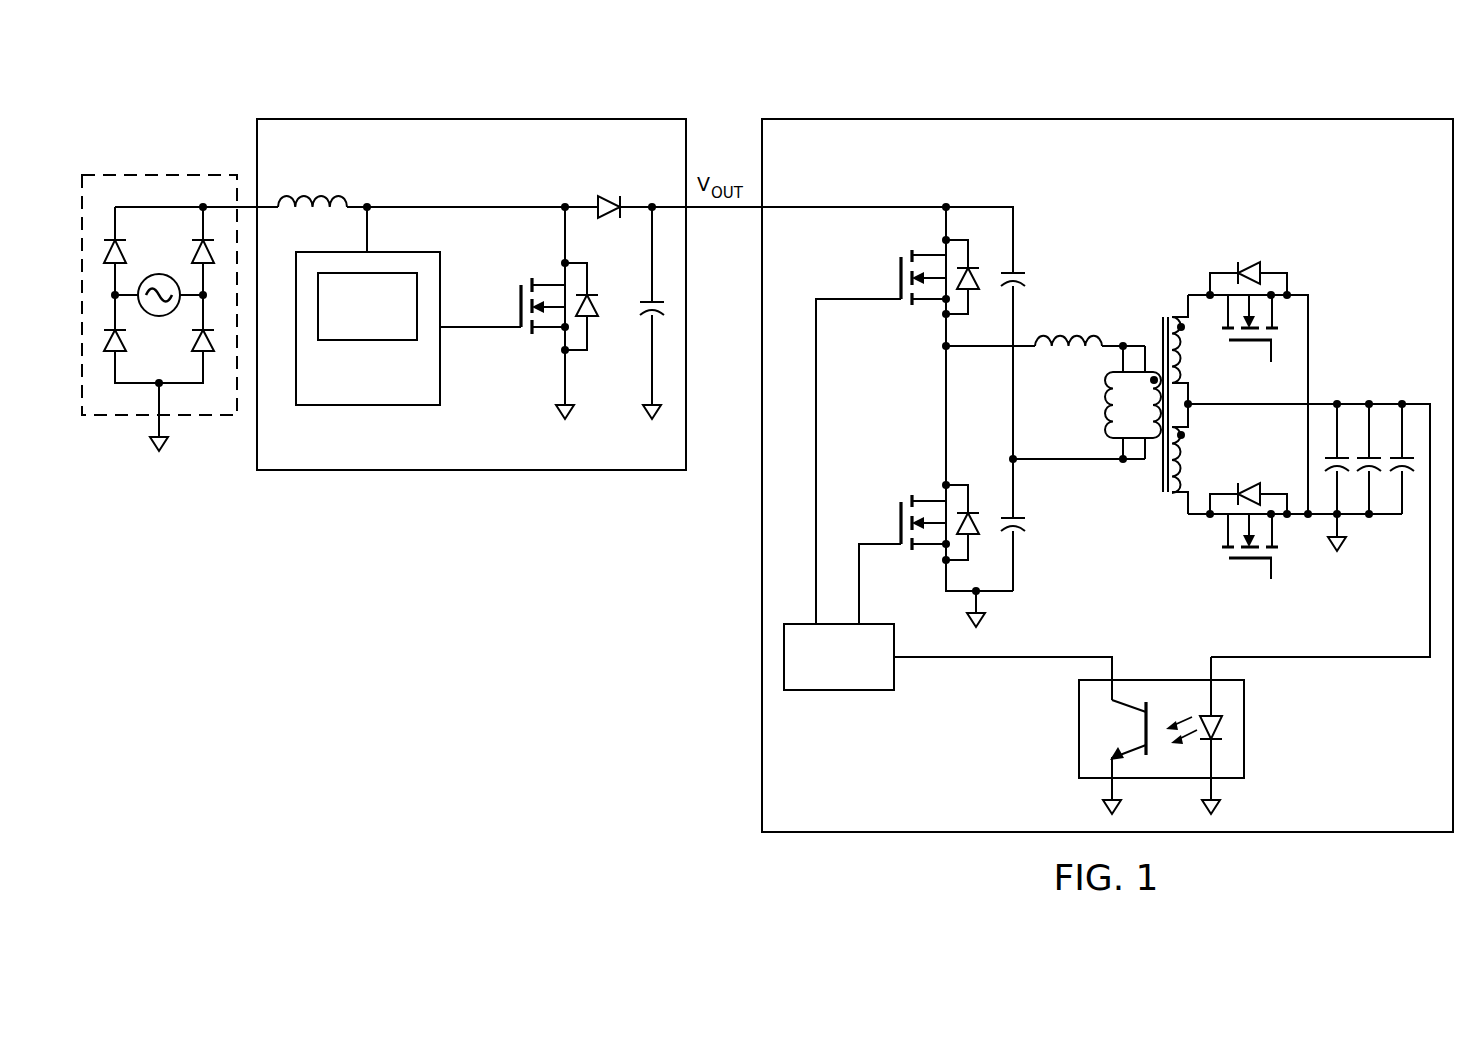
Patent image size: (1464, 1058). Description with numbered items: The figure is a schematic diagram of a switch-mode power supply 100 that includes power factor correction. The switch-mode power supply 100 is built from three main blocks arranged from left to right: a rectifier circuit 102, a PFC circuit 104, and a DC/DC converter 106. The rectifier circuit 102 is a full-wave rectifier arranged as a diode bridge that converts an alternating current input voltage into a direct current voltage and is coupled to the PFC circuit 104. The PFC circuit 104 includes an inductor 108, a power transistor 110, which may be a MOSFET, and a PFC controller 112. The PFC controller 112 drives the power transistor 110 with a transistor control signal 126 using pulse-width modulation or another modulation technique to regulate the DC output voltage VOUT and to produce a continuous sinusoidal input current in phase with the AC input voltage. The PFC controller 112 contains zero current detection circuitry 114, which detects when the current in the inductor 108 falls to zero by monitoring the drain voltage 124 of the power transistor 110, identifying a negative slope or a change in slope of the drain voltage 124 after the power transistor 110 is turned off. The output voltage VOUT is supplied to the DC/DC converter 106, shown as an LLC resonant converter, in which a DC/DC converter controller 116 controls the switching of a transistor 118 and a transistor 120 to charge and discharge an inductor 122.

The switch-mode power supply 100 is at (602, 72).
The rectifier circuit 102 is at (147, 174).
The PFC circuit 104 is at (421, 119).
The DC/DC converter 106 is at (1137, 119).
The inductor 108 is at (303, 192).
The power transistor 110 is at (517, 294).
The PFC controller 112 is at (356, 408).
The zero current detection circuitry 114 is at (362, 344).
The DC/DC converter controller 116 is at (838, 692).
The transistor 118 is at (898, 267).
The transistor 120 is at (898, 514).
The inductor 122 is at (1077, 332).
The drain voltage 124 is at (463, 206).
The transistor control signal 126 is at (488, 334).